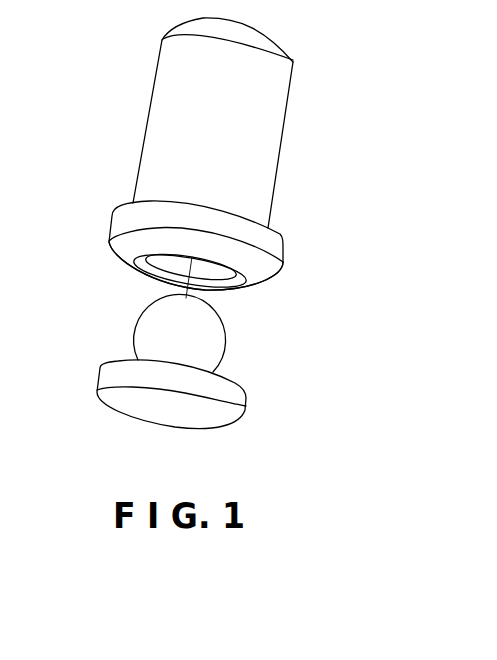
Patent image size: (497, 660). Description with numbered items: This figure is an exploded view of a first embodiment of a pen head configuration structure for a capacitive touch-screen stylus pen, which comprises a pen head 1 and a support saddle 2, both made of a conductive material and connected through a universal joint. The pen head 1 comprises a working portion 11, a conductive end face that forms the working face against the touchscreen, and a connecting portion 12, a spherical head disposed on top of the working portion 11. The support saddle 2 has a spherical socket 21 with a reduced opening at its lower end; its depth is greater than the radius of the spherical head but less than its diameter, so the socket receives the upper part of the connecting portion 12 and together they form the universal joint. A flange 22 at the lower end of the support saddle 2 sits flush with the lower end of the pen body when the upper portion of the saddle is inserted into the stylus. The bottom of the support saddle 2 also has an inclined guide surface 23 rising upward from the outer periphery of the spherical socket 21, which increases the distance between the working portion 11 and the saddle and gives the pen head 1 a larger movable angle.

The pen head 1 is at (239, 361).
The working portion 11 is at (237, 400).
The connecting portion 12 is at (203, 345).
The support saddle 2 is at (252, 150).
The spherical socket 21 is at (175, 259).
The flange 22 is at (267, 240).
The inclined guide surface 23 is at (255, 267).